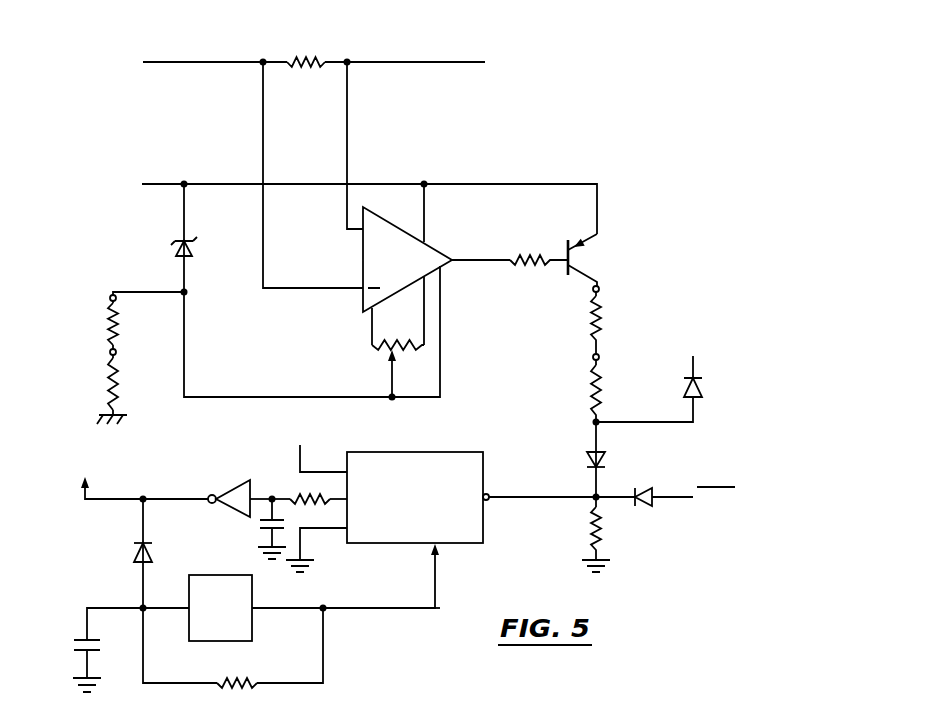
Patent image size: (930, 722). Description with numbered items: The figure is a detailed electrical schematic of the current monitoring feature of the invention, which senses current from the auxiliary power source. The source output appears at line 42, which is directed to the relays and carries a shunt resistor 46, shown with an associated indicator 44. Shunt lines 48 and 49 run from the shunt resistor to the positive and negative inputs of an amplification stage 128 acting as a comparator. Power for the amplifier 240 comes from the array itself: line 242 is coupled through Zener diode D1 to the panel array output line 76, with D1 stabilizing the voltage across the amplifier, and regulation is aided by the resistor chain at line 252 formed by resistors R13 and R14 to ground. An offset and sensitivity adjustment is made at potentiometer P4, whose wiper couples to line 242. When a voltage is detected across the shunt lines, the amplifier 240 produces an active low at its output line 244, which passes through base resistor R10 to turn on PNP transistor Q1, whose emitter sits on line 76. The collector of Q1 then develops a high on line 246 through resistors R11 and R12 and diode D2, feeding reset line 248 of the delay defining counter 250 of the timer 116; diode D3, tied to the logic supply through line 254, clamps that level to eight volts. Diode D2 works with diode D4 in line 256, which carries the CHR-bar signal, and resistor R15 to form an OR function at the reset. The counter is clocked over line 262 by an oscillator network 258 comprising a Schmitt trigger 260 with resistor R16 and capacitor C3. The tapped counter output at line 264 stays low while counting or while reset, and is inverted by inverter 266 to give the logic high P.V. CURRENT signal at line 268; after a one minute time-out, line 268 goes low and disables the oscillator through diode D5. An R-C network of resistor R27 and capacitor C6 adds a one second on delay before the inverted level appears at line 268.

The output line 42 is at (203, 63).
The sensing resistor 44 is at (293, 52).
The shunt resistor 46 is at (310, 61).
The shunt line 48 is at (349, 125).
The shunt line 49 is at (265, 125).
The panel array output line 76 is at (153, 185).
The resistor chain line 252 is at (140, 340).
The amplification stage 128 is at (348, 307).
The amplifier 240 is at (433, 243).
The output line 244 is at (475, 263).
The collector line 246 is at (601, 289).
The line 242 is at (258, 397).
The counter 250 is at (443, 452).
The reset line 248 is at (522, 501).
The line 254 is at (668, 423).
The line 256 is at (669, 496).
The oscillator network 258 is at (233, 559).
The Schmitt trigger 260 is at (254, 597).
The clock output line 262 is at (398, 584).
The output line 264 is at (273, 496).
The inverter 266 is at (233, 481).
The output line 268 is at (130, 497).
The timer 116 is at (444, 618).
The Zener diode D1 is at (195, 247).
The resistor R13 is at (119, 331).
The resistor R14 is at (119, 384).
The potentiometer P4 is at (380, 353).
The base resistor R10 is at (521, 258).
The PNP transistor Q1 is at (583, 268).
The resistor R11 is at (603, 338).
The resistor R12 is at (603, 390).
The diode D3 is at (703, 387).
The diode D2 is at (606, 462).
The diode D4 is at (647, 508).
The resistor R15 is at (590, 541).
The resistor R27 is at (311, 495).
The capacitor C6 is at (286, 522).
The diode D5 is at (130, 553).
The capacitor C3 is at (74, 638).
The resistor R16 is at (222, 678).